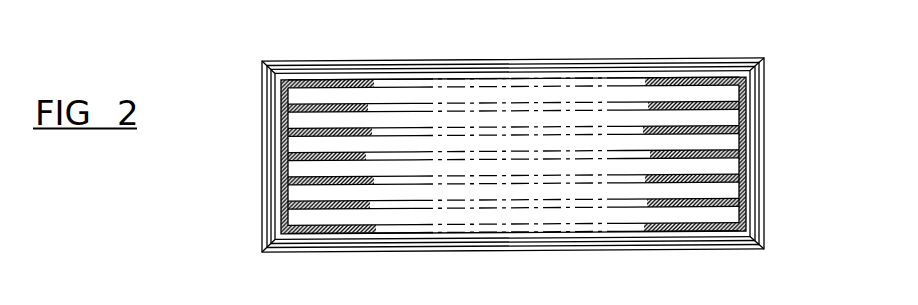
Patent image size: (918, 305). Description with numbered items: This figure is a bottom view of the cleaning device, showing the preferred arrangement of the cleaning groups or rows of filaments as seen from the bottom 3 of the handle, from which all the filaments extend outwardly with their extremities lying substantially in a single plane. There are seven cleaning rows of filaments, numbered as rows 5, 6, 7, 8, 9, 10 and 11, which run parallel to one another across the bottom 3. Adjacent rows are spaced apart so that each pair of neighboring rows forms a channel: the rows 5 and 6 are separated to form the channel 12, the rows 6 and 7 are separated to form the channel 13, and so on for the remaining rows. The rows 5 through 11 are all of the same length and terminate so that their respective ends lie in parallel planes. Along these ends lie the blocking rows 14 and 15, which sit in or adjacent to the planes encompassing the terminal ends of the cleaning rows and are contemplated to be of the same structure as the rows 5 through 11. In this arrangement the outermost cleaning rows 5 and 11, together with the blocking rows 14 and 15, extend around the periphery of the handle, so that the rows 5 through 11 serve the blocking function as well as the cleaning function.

The bottom 3 is at (437, 72).
The cleaning row of filaments 5 is at (703, 80).
The cleaning row of filaments 6 is at (723, 101).
The cleaning row of filaments 7 is at (303, 132).
The cleaning row of filaments 8 is at (723, 149).
The cleaning row of filaments 9 is at (303, 178).
The cleaning row of filaments 10 is at (722, 214).
The cleaning row of filaments 11 is at (703, 232).
The channel 12 is at (668, 93).
The channel 13 is at (637, 120).
The blocking row of filaments 14 is at (283, 190).
The blocking row of filaments 15 is at (740, 163).